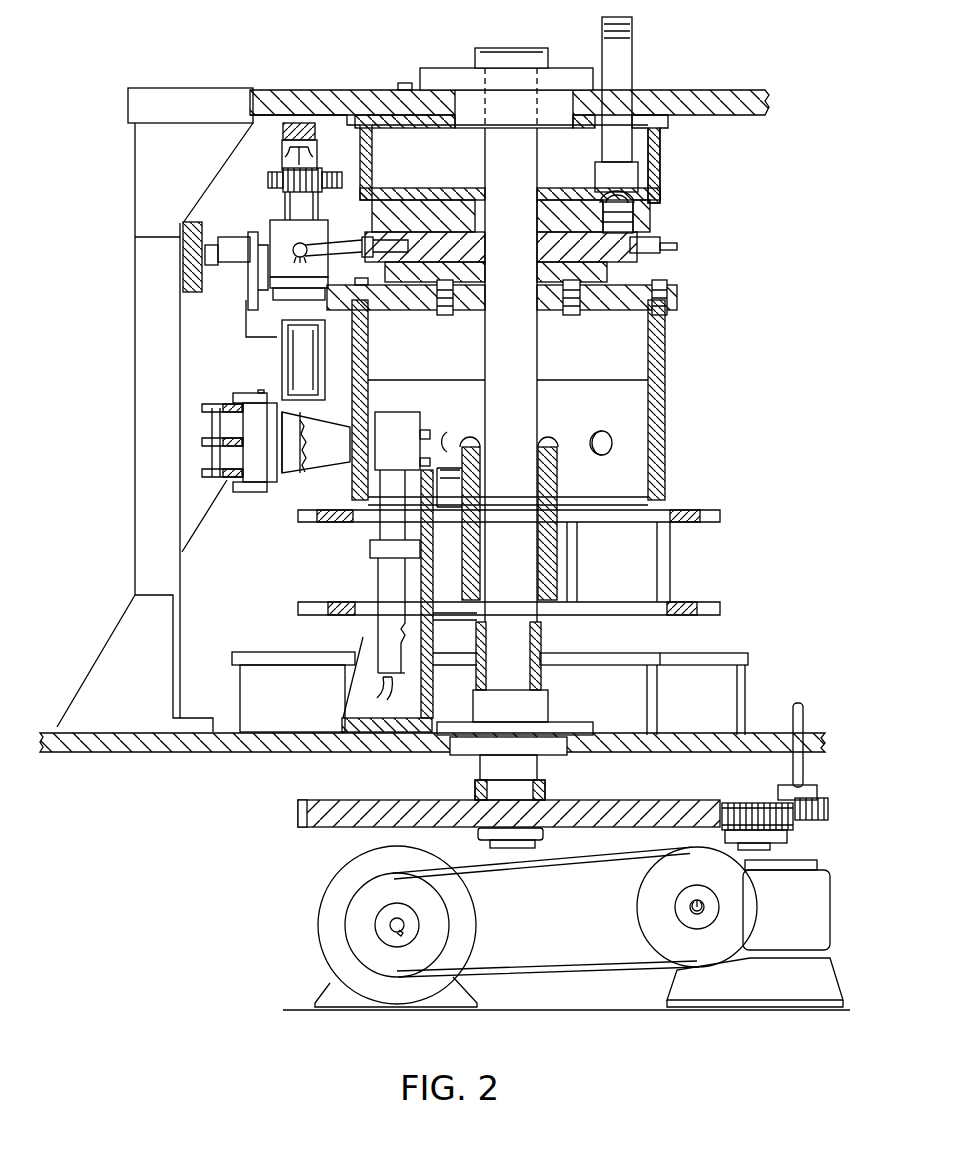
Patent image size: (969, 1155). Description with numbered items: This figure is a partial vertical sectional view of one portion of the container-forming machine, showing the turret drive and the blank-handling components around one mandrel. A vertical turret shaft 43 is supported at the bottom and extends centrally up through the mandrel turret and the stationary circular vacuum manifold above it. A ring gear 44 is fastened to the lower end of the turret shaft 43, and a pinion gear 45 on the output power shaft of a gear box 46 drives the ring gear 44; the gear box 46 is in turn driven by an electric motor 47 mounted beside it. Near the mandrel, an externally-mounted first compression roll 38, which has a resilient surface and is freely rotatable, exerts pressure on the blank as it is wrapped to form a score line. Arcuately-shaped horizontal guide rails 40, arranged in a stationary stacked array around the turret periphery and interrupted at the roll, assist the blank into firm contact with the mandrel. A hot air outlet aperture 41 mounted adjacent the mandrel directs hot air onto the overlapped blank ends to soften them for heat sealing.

The first compression roll 38 is at (253, 473).
The horizontal guide rails 40 is at (203, 473).
The hot air outlet aperture 41 is at (293, 478).
The vertical turret shaft 43 is at (537, 415).
The ring gear 44 is at (317, 830).
The pinion gear 45 is at (750, 803).
The gear box 46 is at (803, 917).
The electric motor 47 is at (318, 958).